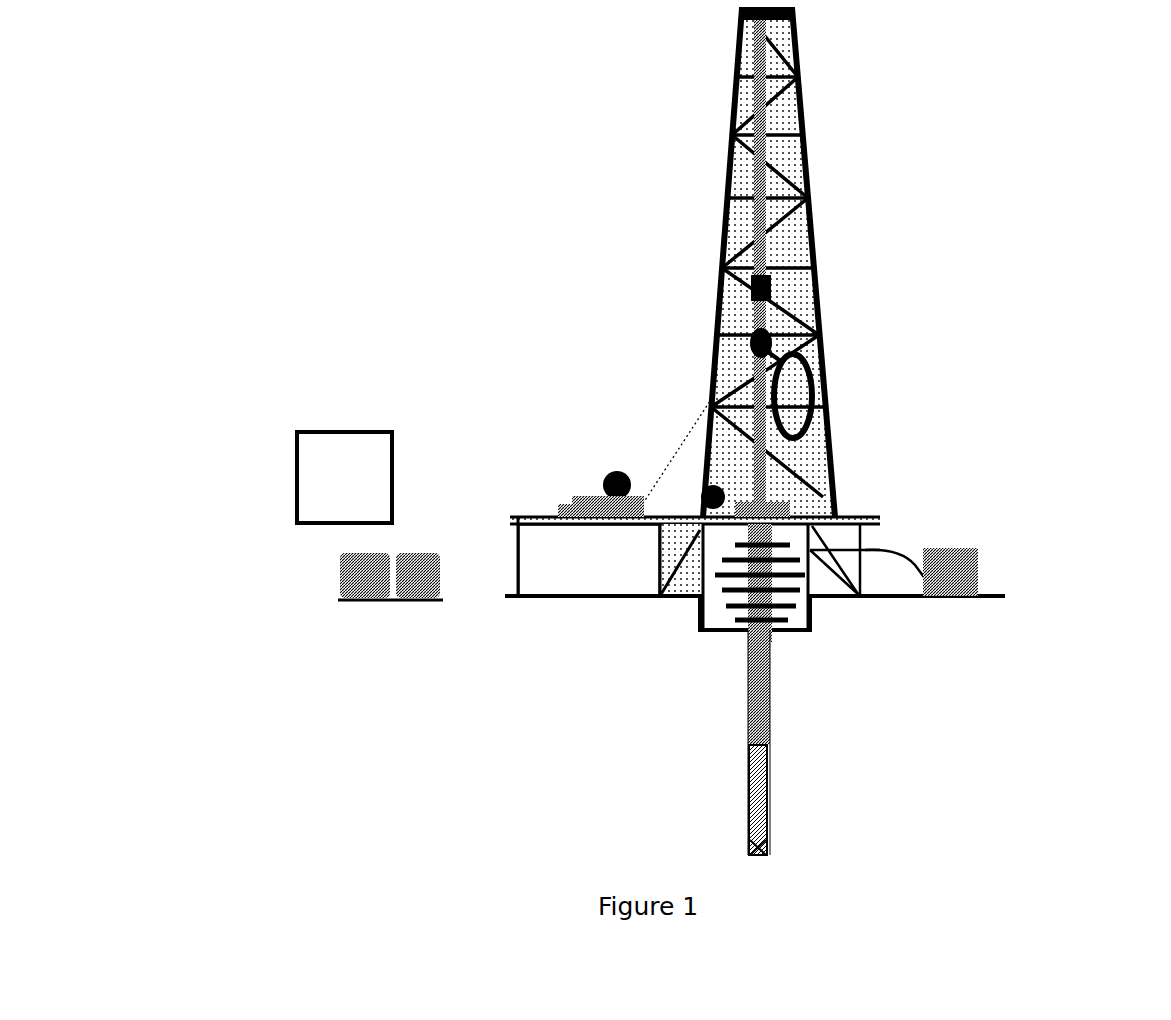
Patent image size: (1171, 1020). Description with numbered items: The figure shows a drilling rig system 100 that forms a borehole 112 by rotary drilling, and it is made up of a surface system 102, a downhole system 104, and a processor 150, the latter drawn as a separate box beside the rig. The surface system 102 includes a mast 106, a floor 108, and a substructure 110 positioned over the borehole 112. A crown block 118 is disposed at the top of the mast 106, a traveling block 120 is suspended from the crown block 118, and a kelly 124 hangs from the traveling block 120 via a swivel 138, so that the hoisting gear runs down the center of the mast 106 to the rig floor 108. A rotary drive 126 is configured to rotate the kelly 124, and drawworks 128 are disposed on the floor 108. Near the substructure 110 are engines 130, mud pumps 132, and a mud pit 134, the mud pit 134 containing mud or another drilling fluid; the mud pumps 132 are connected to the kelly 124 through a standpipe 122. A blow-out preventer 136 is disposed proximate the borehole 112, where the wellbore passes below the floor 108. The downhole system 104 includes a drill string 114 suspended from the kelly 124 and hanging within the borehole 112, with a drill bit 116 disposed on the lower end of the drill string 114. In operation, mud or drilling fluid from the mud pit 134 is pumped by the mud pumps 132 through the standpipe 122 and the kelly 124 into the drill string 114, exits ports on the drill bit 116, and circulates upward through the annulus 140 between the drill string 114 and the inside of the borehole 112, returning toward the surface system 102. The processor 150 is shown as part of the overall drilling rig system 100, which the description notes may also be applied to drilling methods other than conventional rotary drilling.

The drilling rig system 100 is at (314, 131).
The surface system 102 is at (1046, 220).
The downhole system 104 is at (1049, 708).
The mast 106 is at (781, 262).
The floor 108 is at (724, 540).
The substructure 110 is at (565, 560).
The borehole 112 is at (748, 762).
The drill string 114 is at (768, 655).
The drill bit 116 is at (765, 845).
The crown block 118 is at (790, 14).
The traveling block 120 is at (765, 286).
The standpipe 122 is at (790, 376).
The kelly 124 is at (768, 465).
The rotary drive 126 is at (708, 490).
The drawworks 128 is at (612, 486).
The engines 130 is at (390, 576).
The mud pumps 132 is at (755, 577).
The mud pit 134 is at (950, 572).
The blow-out preventer 136 is at (760, 583).
The swivel 138 is at (745, 322).
The annulus 140 is at (768, 770).
The processor 150 is at (344, 477).